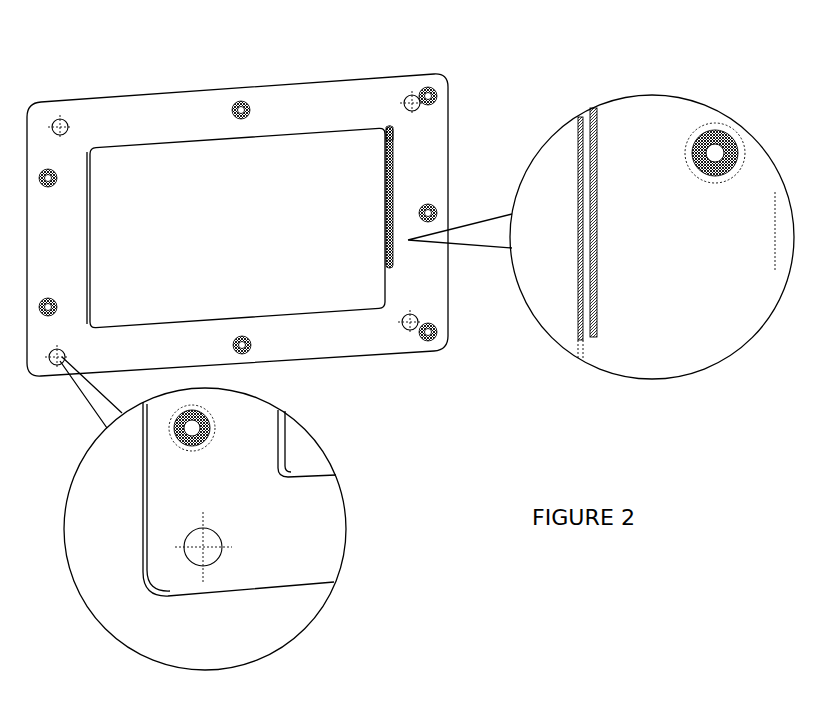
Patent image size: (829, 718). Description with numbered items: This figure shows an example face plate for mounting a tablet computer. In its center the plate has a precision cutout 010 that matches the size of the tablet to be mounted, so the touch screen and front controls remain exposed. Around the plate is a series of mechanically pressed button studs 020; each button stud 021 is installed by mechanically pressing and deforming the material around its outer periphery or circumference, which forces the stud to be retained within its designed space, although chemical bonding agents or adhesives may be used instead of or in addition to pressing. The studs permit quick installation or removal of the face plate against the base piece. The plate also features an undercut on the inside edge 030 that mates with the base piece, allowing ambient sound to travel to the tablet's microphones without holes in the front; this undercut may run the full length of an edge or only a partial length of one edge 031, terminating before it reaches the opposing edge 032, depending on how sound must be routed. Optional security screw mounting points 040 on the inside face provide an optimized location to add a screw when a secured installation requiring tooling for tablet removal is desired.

The precision cutout 010 is at (144, 167).
The button studs 020 is at (422, 340).
The button stud 021 is at (737, 178).
The undercut on the inside edge 030 is at (93, 233).
The partial length of one edge 031 is at (384, 133).
The opposing edge 032 is at (384, 265).
The security screw mounting points 040 is at (225, 545).